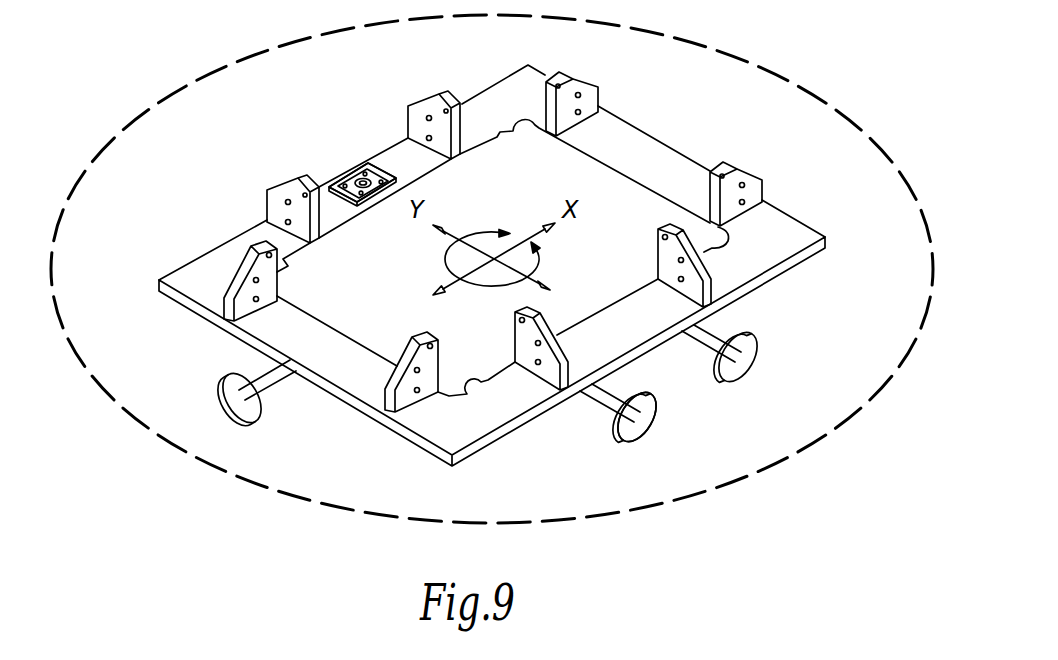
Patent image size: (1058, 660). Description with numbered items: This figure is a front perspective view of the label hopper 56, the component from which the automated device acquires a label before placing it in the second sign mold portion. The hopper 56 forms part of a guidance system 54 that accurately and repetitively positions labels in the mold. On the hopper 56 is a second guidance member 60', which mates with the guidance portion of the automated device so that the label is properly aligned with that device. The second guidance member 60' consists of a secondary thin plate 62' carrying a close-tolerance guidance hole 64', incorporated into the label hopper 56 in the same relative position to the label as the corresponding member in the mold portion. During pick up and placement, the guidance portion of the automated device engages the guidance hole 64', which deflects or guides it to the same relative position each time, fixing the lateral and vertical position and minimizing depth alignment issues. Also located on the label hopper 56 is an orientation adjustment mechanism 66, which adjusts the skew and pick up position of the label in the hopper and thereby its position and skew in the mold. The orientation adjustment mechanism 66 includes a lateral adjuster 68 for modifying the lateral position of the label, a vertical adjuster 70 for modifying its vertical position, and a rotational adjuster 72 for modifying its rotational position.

The guidance system 54 is at (338, 125).
The label hopper 56 is at (352, 428).
The second guidance member 60' is at (367, 151).
The secondary thin plate 62' is at (273, 201).
The guidance hole 64' is at (335, 167).
The orientation adjustment mechanism 66 is at (605, 449).
The lateral adjuster 68 is at (228, 411).
The vertical adjuster 70 is at (757, 370).
The rotational adjuster 72 is at (648, 426).